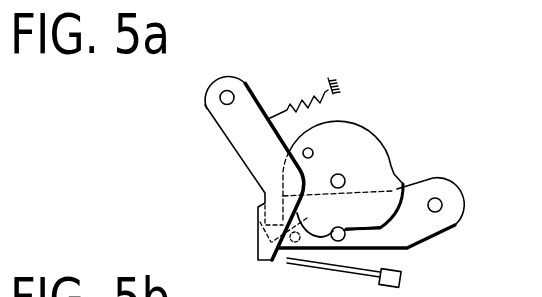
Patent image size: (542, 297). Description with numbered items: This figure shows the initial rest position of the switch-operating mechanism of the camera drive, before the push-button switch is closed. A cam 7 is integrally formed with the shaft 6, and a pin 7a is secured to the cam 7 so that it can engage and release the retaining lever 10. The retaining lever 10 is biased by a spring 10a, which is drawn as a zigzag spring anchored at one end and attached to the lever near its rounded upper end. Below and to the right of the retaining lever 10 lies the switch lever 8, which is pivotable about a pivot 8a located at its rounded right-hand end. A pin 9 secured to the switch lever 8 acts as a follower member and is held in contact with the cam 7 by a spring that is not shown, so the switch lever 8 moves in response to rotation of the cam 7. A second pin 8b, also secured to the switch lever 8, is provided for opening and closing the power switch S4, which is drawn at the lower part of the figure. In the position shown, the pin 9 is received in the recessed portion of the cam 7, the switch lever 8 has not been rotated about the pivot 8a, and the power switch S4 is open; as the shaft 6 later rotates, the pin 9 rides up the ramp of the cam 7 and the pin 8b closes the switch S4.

The retaining lever 10 is at (230, 134).
The spring 10a is at (298, 94).
The cam 7 is at (378, 140).
The pin 7a is at (313, 151).
The shaft 6 is at (345, 175).
The switch lever 8 is at (455, 178).
The pivot 8a is at (440, 211).
The pin 8b is at (305, 222).
The pin 9 is at (344, 229).
The power switch S4 is at (312, 268).